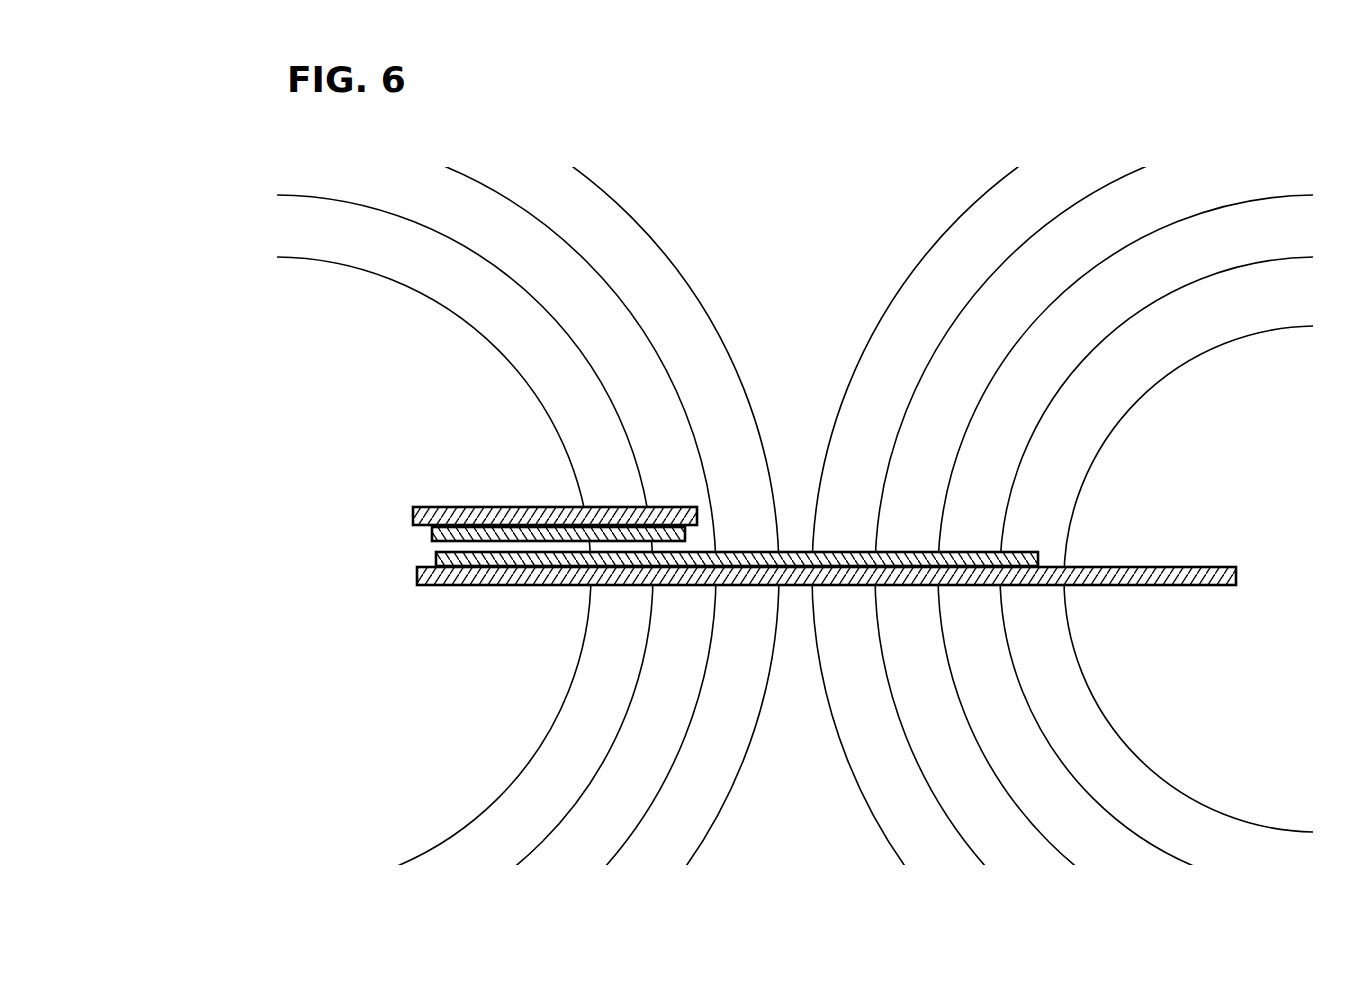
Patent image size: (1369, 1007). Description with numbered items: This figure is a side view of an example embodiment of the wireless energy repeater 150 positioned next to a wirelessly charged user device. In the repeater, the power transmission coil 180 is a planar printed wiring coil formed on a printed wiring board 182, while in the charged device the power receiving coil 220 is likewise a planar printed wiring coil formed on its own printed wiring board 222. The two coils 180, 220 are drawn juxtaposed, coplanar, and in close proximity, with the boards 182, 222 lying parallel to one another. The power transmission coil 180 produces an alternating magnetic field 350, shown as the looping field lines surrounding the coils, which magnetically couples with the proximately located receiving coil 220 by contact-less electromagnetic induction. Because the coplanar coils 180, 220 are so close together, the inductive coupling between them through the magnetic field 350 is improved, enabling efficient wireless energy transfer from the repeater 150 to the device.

The alternating magnetic field 350 is at (748, 164).
The printed wiring board 222 is at (418, 507).
The power receiving coil 220 is at (432, 534).
The power transmission coil 180 is at (432, 558).
The printed wiring board 182 is at (418, 588).
The wireless energy repeater 150 is at (731, 732).